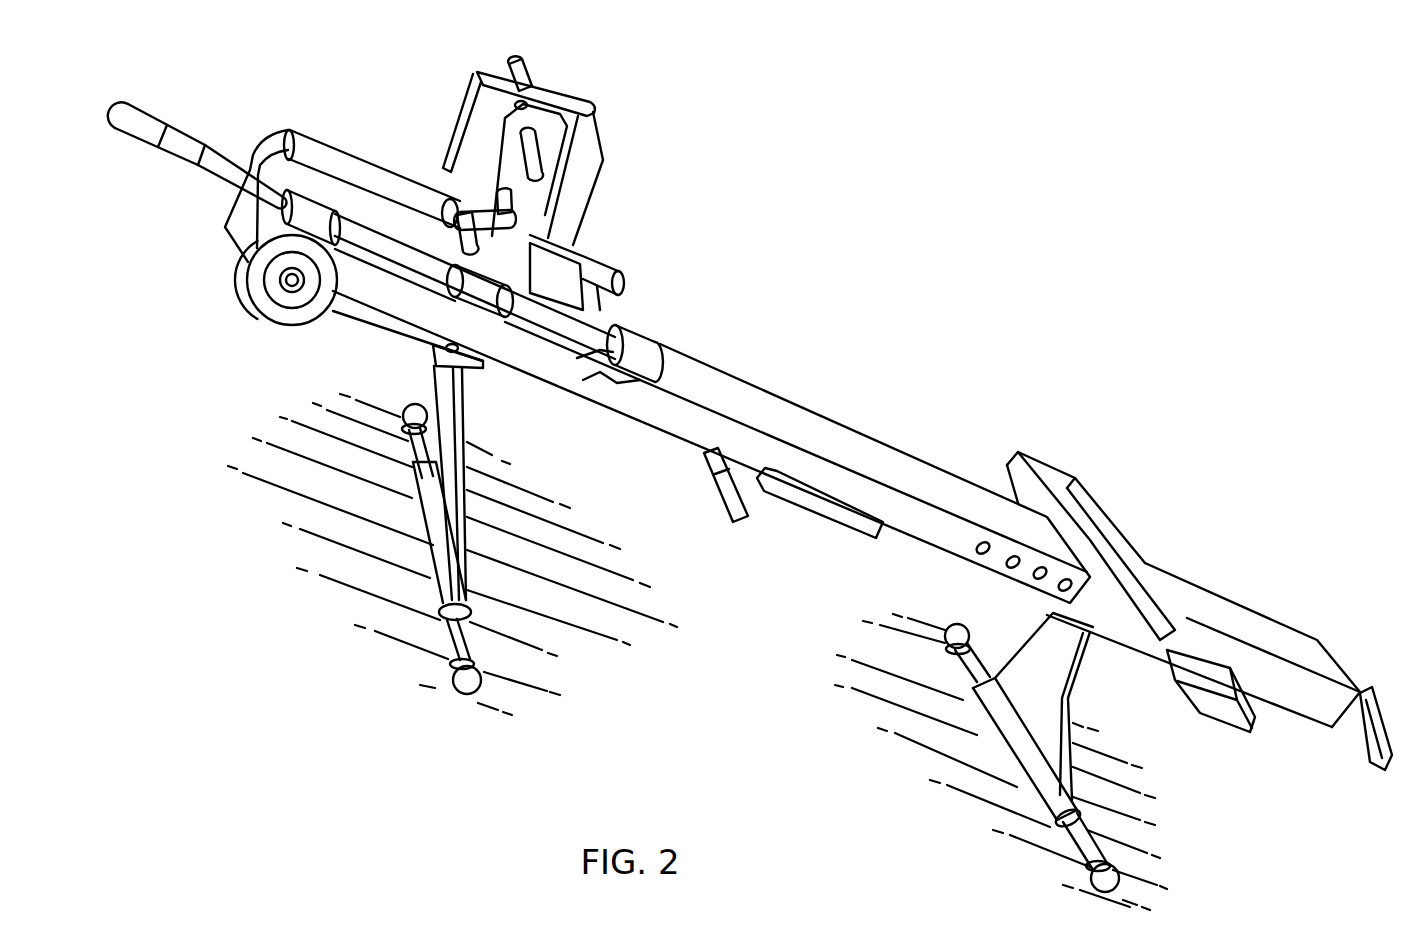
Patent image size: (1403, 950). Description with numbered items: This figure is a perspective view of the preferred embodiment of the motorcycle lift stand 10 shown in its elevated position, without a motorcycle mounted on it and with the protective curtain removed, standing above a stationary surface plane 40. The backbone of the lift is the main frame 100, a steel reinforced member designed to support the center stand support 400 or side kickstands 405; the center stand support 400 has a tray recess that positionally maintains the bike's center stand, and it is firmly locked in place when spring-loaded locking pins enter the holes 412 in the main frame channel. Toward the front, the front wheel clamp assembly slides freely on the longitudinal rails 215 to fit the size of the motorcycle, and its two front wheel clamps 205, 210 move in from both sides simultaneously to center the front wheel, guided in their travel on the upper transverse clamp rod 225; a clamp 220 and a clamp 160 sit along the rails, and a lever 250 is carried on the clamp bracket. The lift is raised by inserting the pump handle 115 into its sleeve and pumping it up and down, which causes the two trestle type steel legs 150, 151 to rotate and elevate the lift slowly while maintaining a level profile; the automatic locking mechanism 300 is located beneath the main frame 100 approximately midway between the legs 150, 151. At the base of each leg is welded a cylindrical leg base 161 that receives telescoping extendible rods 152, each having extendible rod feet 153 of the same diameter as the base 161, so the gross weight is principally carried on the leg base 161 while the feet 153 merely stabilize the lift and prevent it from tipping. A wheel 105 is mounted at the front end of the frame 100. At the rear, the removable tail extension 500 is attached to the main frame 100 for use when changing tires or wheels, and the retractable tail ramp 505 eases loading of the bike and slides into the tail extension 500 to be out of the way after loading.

The lift apparatus 10 is at (752, 323).
The stationary surface plane 40 is at (555, 630).
The main frame 100 is at (898, 460).
The wheel 105 is at (248, 227).
The pump handle 115 is at (190, 133).
The front leg 150 is at (467, 507).
The rear leg 151 is at (1075, 703).
The telescoping extendible rod 152 is at (412, 438).
The extendible rod foot 153 is at (404, 404).
The clamp 160 is at (487, 292).
The cylindrical leg base 161 is at (420, 548).
The front wheel clamp 205 is at (563, 97).
The front wheel clamp 210 is at (600, 147).
The longitudinal rails 215 is at (377, 170).
The clamp 220 is at (622, 274).
The upper transverse clamp rod 225 is at (510, 66).
The lever 250 is at (515, 212).
The automatic locking mechanism 300 is at (790, 502).
The center stand support 400 is at (1072, 510).
The side kickstand 405 is at (1250, 663).
The holes 412 is at (1057, 590).
The removable tail extension 500 is at (1268, 630).
The retractable tail ramp 505 is at (1357, 753).